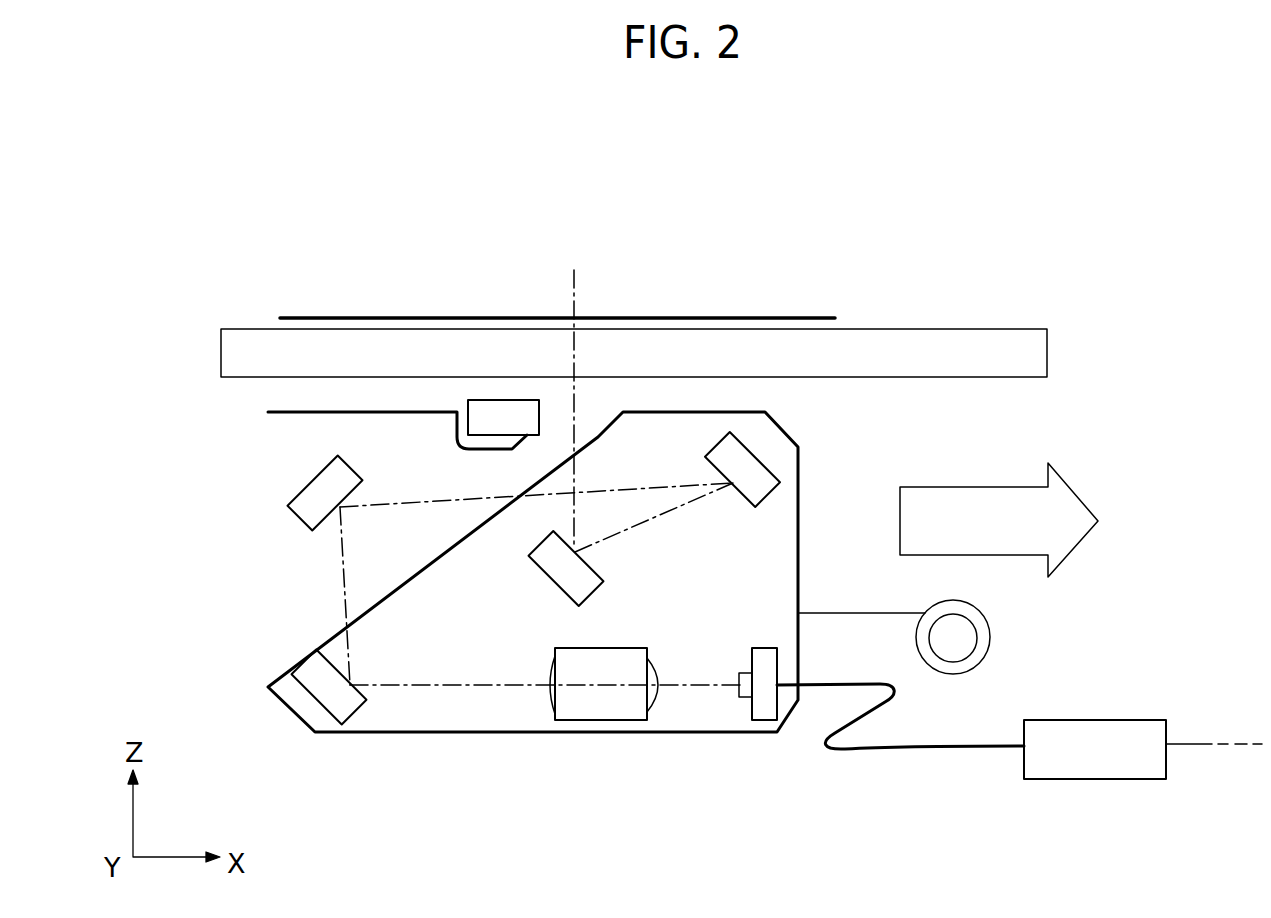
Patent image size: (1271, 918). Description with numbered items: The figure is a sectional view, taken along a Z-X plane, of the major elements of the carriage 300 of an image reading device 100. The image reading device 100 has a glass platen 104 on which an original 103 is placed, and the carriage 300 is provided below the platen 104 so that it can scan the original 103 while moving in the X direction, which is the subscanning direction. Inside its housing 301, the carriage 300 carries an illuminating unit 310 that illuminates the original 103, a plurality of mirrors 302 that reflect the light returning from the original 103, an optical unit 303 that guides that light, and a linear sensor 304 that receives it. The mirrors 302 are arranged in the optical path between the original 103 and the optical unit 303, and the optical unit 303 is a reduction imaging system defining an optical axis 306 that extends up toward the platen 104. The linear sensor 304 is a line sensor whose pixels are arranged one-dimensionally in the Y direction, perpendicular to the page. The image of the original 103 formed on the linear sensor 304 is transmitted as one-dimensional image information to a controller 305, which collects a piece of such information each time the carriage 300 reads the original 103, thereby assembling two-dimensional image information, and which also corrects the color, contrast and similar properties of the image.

The image reading device 100 is at (597, 187).
The original 103 is at (770, 315).
The platen 104 is at (975, 365).
The carriage 300 is at (222, 398).
The housing 301 is at (338, 700).
The mirrors 302 is at (748, 485).
The optical unit 303 is at (610, 713).
The linear sensor 304 is at (762, 713).
The controller 305 is at (1090, 765).
The optical axis 306 is at (574, 285).
The illuminating unit 310 is at (493, 410).